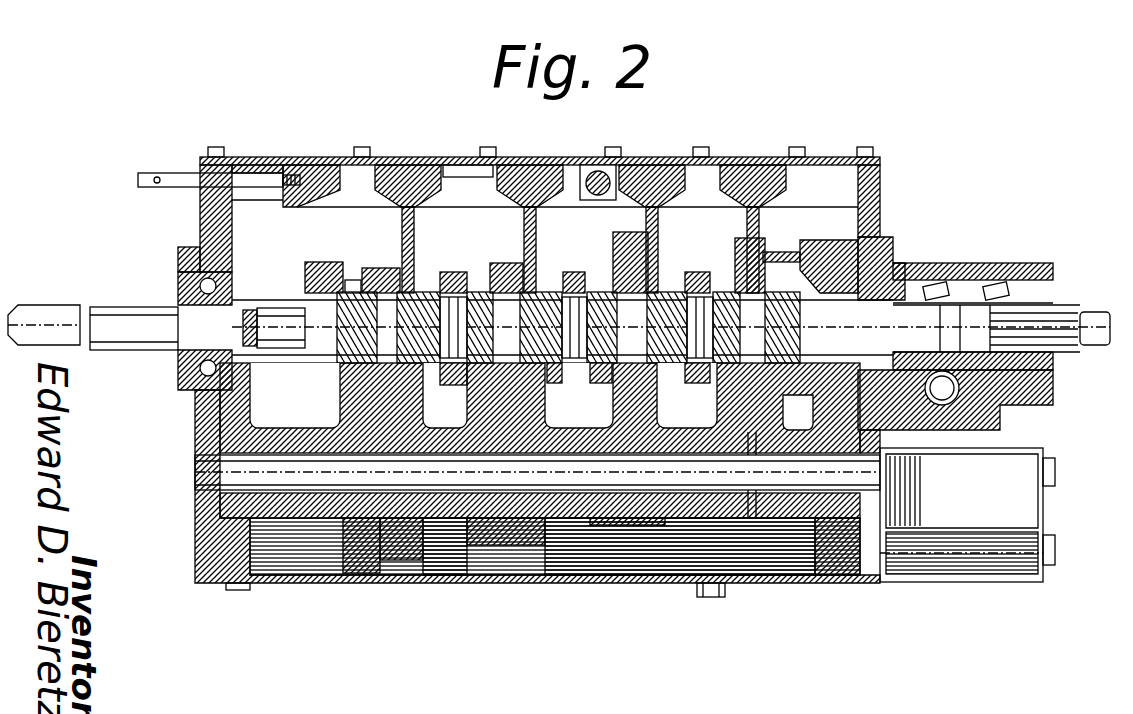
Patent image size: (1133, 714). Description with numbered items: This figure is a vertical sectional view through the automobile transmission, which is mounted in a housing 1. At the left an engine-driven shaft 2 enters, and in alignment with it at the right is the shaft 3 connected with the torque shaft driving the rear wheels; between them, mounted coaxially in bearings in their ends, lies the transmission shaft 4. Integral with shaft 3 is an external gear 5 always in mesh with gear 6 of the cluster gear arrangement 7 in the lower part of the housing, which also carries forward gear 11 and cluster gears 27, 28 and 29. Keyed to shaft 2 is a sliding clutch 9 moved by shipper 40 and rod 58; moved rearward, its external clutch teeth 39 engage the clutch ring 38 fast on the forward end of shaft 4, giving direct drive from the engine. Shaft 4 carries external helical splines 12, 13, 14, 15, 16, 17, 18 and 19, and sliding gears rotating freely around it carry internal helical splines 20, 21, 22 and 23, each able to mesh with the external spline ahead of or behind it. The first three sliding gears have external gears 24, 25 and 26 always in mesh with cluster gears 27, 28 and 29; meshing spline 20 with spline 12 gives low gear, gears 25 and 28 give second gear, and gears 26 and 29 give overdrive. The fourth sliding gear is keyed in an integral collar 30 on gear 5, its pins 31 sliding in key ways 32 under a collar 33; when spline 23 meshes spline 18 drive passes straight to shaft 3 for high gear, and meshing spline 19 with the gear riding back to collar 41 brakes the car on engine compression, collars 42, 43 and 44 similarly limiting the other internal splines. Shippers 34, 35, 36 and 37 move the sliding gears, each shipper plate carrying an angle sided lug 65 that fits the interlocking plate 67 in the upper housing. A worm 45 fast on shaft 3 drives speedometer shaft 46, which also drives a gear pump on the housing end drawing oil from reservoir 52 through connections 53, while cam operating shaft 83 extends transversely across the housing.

The housing 1 is at (200, 548).
The shaft 2 is at (42, 322).
The shaft 3 is at (950, 327).
The transmission shaft 4 is at (276, 304).
The external gear 5 is at (873, 412).
The gear 6 is at (835, 527).
The cluster gear arrangement 7 is at (447, 520).
The sliding clutch 9 is at (262, 312).
The forward gear 11 is at (238, 590).
The external helical spline 12 is at (352, 292).
The external helical spline 13 is at (430, 390).
The external helical spline 14 is at (449, 372).
The external helical spline 15 is at (555, 375).
The external helical spline 16 is at (597, 372).
The external helical spline 17 is at (697, 373).
The external helical spline 18 is at (717, 382).
The external helical spline 19 is at (782, 272).
The internal helical spline 20 is at (388, 327).
The internal helical spline 21 is at (514, 327).
The internal helical spline 22 is at (637, 327).
The internal helical spline 23 is at (756, 327).
The gear 24 is at (373, 292).
The gear 25 is at (502, 263).
The gear 26 is at (628, 232).
The cluster gear 27 is at (370, 583).
The cluster gear 28 is at (512, 546).
The cluster gear 29 is at (627, 524).
The collar 30 is at (708, 437).
The pins 31 is at (768, 440).
The key ways 32 is at (763, 398).
The collar 33 is at (745, 244).
The shipper 34 is at (414, 242).
The shipper 35 is at (537, 233).
The shipper 36 is at (660, 230).
The shipper 37 is at (740, 162).
The clutch ring 38 is at (323, 262).
The external clutch teeth 39 is at (288, 380).
The shipper 40 is at (322, 157).
The collar 41 is at (870, 236).
The collar 42 is at (700, 256).
The collar 43 is at (574, 272).
The collar 44 is at (452, 272).
The worm 45 is at (933, 273).
The speedometer shaft 46 is at (947, 406).
The reservoir 52 is at (935, 547).
The connections 53 is at (1037, 560).
The rod 58 is at (143, 186).
The angle sided lug 65 is at (405, 160).
The interlocking plate 67 is at (456, 162).
The cam operating shaft 83 is at (598, 171).